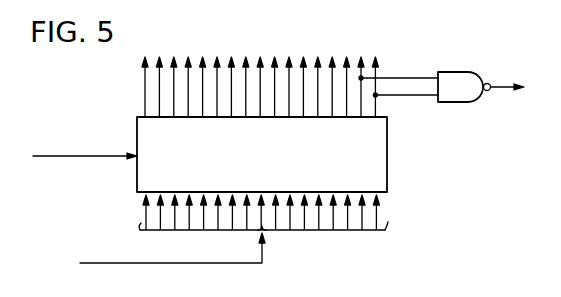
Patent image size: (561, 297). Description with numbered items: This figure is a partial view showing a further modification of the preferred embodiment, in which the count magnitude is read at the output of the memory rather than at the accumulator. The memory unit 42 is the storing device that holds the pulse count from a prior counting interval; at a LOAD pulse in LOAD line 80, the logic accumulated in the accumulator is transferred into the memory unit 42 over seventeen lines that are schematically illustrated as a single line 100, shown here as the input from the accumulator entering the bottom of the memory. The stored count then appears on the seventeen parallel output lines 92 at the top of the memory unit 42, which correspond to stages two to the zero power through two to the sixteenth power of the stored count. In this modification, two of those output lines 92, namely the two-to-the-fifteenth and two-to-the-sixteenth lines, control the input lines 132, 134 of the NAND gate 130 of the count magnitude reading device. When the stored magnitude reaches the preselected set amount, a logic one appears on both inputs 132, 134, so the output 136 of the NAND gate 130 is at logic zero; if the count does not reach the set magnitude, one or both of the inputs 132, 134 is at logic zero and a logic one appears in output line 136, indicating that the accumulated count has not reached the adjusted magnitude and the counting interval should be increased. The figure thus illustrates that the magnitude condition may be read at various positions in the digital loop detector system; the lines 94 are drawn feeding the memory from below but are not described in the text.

The memory unit 42 is at (399, 161).
The LOAD line 80 is at (102, 153).
The parallel output lines 92 is at (144, 96).
The memory input lines 94 is at (145, 222).
The single line 100 is at (163, 262).
The NAND gate 130 is at (470, 94).
The input line 132 is at (429, 76).
The input line 134 is at (429, 97).
The output line 136 is at (498, 86).